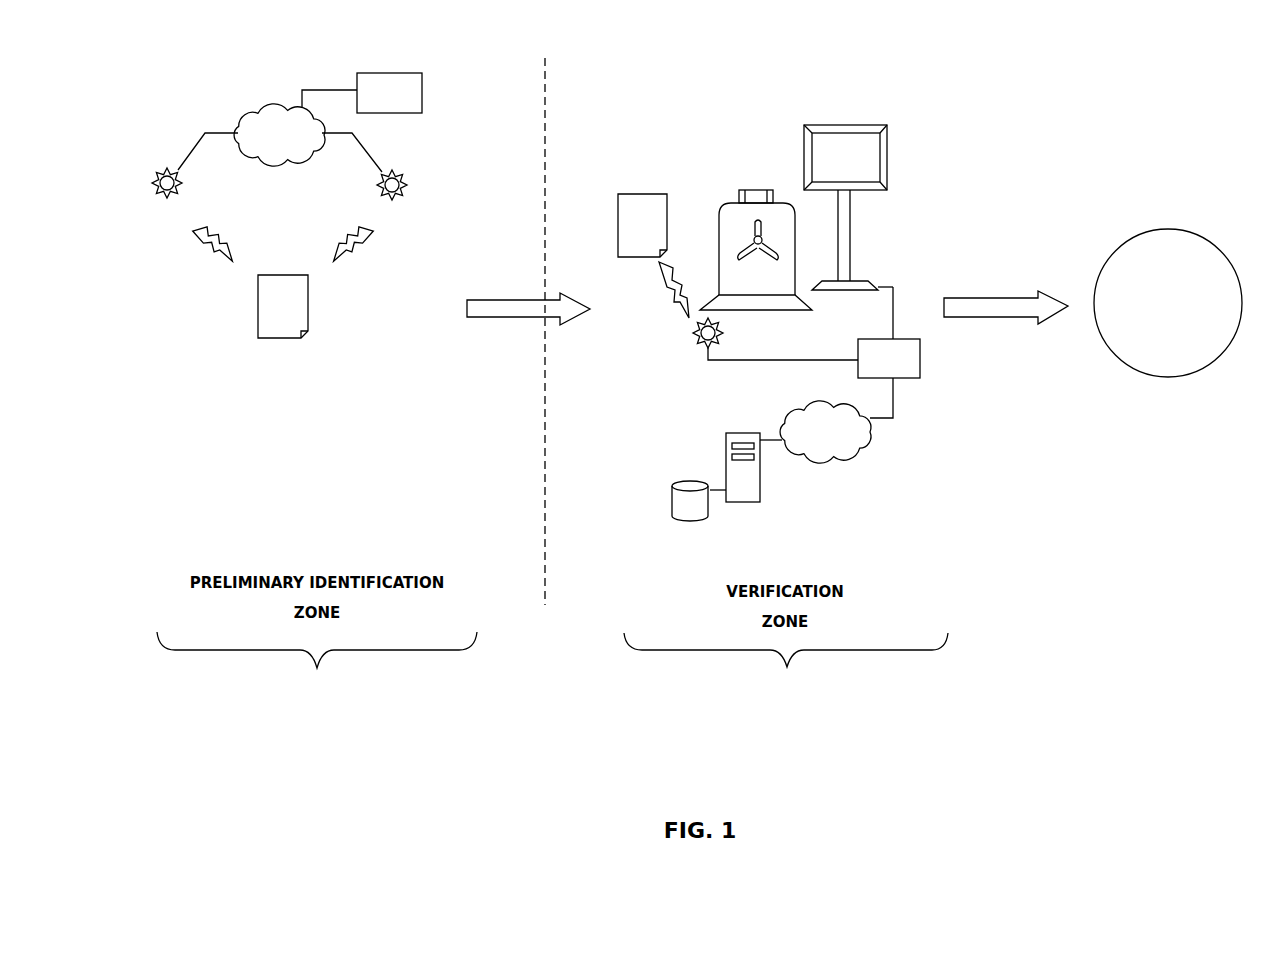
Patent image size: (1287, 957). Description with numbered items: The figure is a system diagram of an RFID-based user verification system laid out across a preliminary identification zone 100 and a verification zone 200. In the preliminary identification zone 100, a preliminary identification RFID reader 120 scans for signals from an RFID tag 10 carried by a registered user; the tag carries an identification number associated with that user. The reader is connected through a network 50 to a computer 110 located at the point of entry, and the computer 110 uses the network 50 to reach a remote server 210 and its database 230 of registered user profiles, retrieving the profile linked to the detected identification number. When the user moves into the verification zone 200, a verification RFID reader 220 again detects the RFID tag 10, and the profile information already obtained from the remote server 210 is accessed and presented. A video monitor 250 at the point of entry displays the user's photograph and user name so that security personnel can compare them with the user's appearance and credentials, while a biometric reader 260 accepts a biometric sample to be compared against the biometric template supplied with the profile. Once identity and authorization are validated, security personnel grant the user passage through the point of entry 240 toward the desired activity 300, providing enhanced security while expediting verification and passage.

The RFID tag 10 is at (265, 338).
The network 50 is at (247, 118).
The preliminary identification zone 100 is at (317, 666).
The computer 110 is at (385, 73).
The preliminary identification RFID reader 120 is at (160, 172).
The verification zone 200 is at (786, 666).
The remote server 210 is at (752, 495).
The verification RFID reader 220 is at (695, 336).
The database 230 is at (680, 482).
The point of entry 240 is at (747, 220).
The video monitor 250 is at (876, 125).
The biometric reader 260 is at (755, 190).
The desired activity 300 is at (1175, 231).